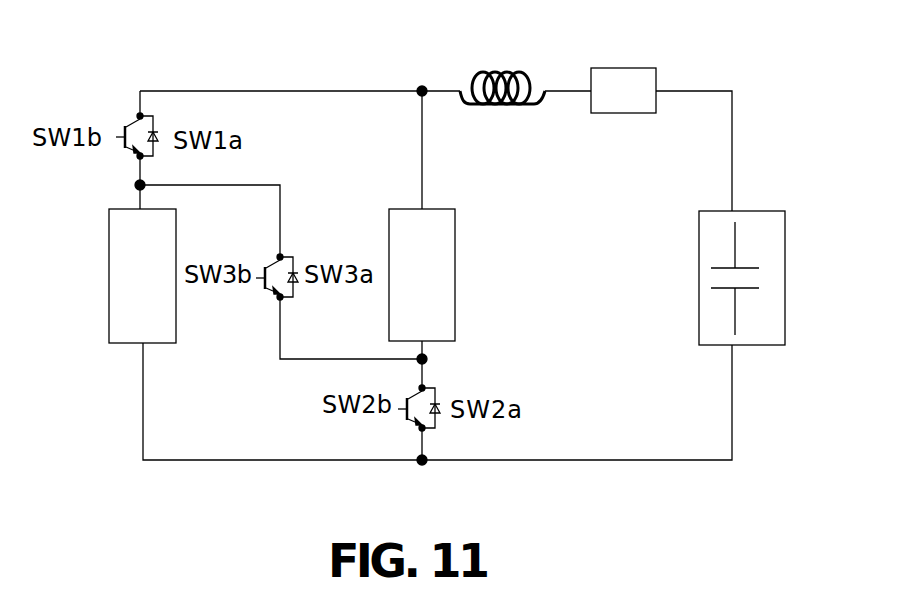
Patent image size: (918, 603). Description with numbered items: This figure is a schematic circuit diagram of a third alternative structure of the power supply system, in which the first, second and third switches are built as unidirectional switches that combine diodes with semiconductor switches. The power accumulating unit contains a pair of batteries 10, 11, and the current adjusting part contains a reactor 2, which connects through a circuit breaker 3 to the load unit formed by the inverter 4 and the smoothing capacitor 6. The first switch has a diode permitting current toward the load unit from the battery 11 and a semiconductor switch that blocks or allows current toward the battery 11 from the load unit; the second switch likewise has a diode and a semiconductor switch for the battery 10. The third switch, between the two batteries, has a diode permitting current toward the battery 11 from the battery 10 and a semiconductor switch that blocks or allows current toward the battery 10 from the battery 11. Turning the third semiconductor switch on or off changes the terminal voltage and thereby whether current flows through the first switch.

The reactor 2 is at (510, 107).
The circuit breaker 3 is at (632, 74).
The inverter 4 is at (750, 211).
The smoothing capacitor 6 is at (747, 282).
The battery 10 is at (447, 307).
The battery 11 is at (140, 296).